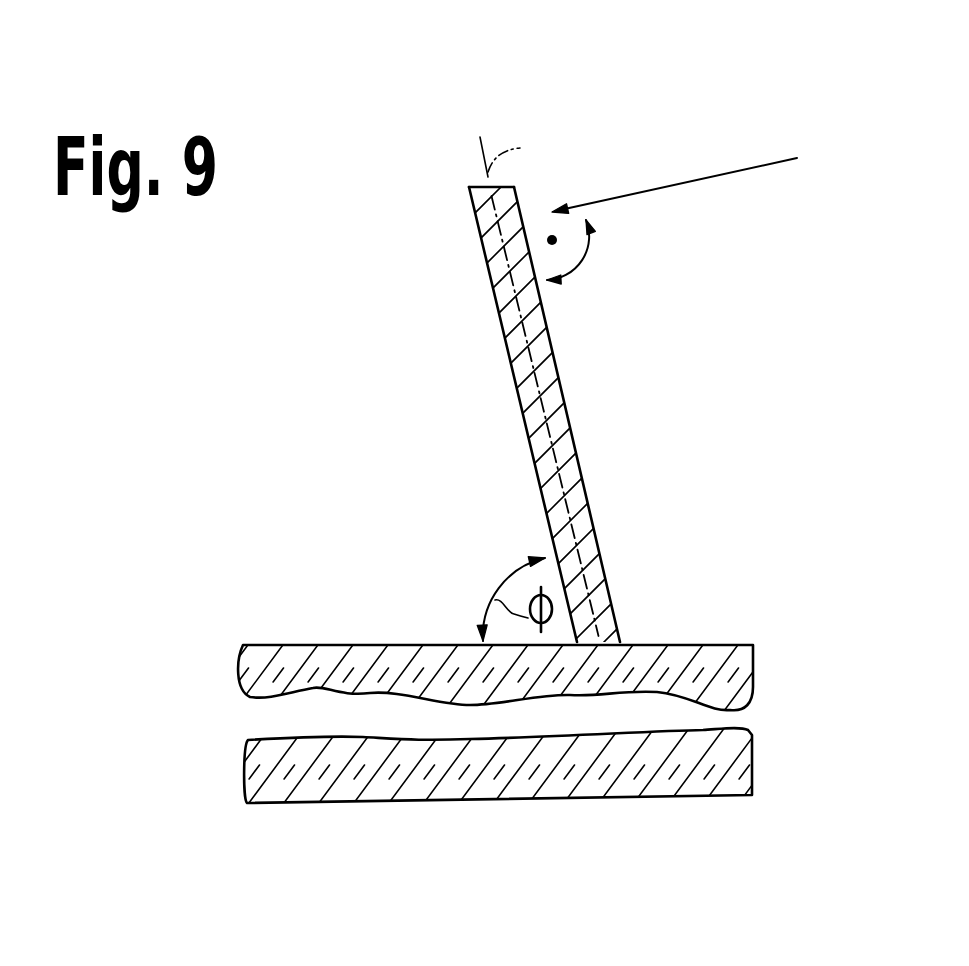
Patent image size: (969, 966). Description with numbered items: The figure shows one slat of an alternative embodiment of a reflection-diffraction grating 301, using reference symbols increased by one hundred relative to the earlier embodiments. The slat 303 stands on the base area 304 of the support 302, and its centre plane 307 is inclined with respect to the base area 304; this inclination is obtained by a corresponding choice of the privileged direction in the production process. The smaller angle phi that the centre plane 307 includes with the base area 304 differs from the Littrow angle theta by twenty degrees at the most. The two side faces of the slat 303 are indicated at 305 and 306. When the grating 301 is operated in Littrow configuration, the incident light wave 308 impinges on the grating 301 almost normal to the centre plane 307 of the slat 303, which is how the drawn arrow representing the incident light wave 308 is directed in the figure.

The reflection-diffraction grating 301 is at (484, 367).
The support 302 is at (407, 773).
The slat 303 is at (484, 382).
The base area 304 is at (730, 642).
The outer side face of tab 305 is at (487, 265).
The inner side face of tab 306 is at (572, 443).
The centre plane 307 is at (528, 147).
The incident light wave 308 is at (733, 172).